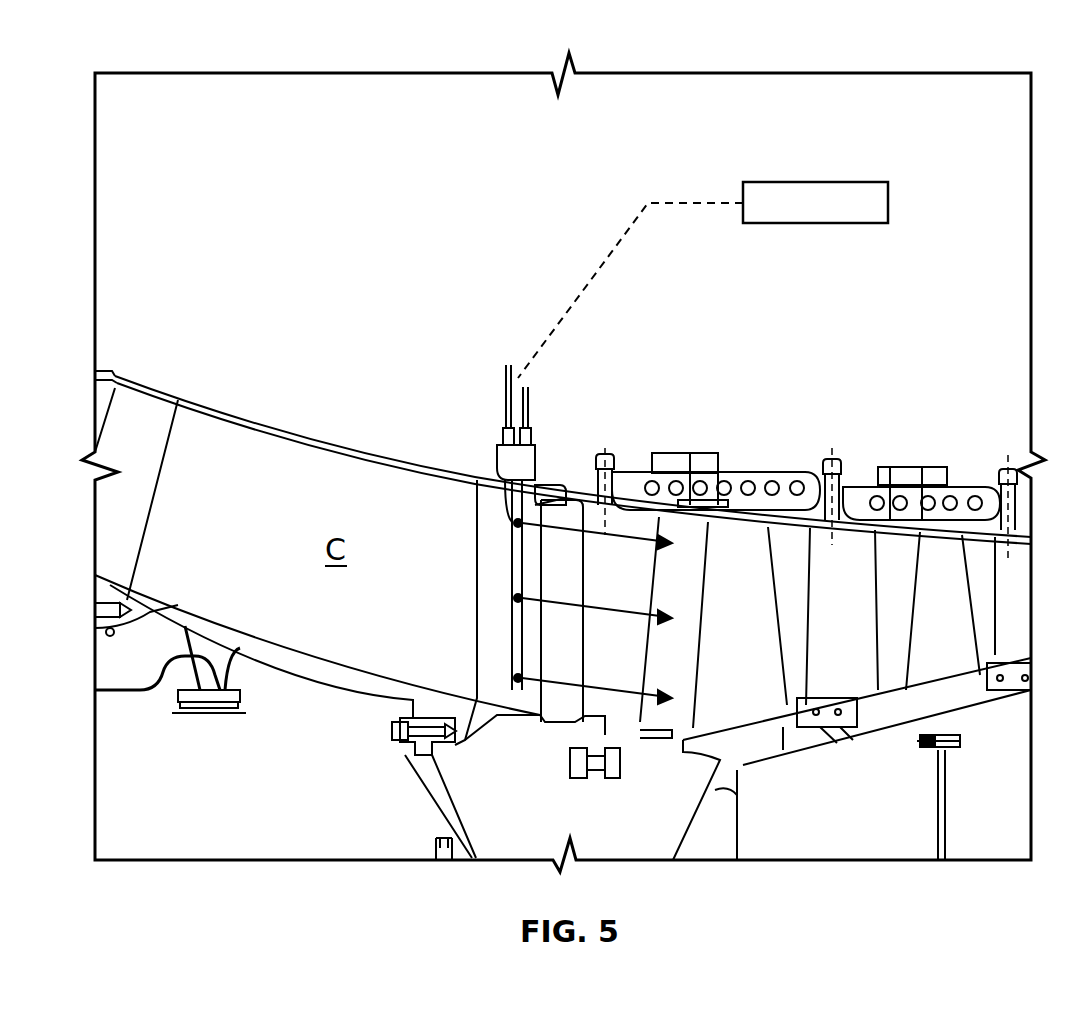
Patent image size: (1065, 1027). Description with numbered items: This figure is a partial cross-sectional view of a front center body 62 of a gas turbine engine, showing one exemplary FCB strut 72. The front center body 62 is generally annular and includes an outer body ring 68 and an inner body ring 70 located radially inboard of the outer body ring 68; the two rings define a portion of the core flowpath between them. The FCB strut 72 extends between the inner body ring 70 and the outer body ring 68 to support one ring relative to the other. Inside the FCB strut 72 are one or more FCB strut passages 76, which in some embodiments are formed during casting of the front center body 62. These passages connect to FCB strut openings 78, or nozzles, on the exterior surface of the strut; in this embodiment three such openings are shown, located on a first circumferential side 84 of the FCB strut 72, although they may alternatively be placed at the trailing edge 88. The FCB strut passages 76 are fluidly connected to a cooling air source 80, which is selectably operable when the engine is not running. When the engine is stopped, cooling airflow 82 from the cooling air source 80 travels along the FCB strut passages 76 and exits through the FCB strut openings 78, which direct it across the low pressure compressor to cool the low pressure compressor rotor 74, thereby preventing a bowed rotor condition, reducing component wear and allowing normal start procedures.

The front center body 62 is at (118, 55).
The outer body ring 68 is at (327, 447).
The inner body ring 70 is at (326, 668).
The FCB strut 72 is at (495, 655).
The low pressure compressor rotor 74 is at (735, 545).
The FCB strut passage 76 is at (515, 575).
The FCB strut opening 78 is at (523, 520).
The cooling air source 80 is at (812, 182).
The cooling airflow 82 is at (558, 722).
The first circumferential side 84 is at (522, 695).
The trailing edge 88 is at (535, 505).